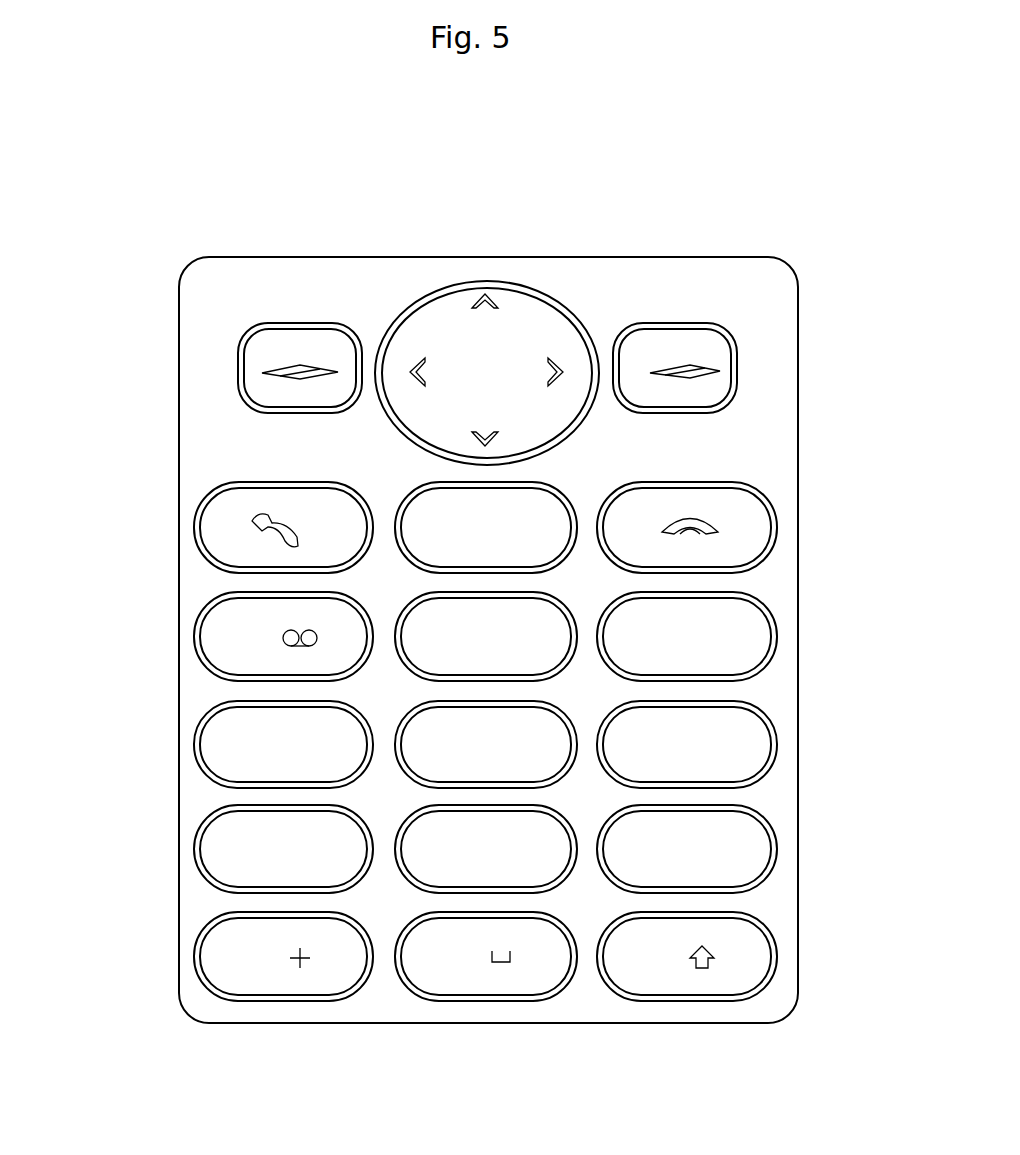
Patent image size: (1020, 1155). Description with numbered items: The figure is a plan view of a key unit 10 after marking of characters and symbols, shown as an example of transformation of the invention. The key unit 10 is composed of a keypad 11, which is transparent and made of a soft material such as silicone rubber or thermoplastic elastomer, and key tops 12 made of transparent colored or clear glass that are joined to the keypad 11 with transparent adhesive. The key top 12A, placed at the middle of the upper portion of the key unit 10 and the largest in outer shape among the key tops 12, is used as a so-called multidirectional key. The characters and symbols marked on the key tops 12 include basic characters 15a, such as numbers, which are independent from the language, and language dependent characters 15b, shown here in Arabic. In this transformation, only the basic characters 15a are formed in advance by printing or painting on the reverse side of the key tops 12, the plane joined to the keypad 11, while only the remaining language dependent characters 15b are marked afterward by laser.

The key unit 10 is at (580, 190).
The keypad 11 is at (709, 262).
The key tops 12 is at (737, 360).
The key top 12A is at (515, 286).
The basic characters 15a is at (294, 370).
The language dependent characters 15b is at (272, 725).